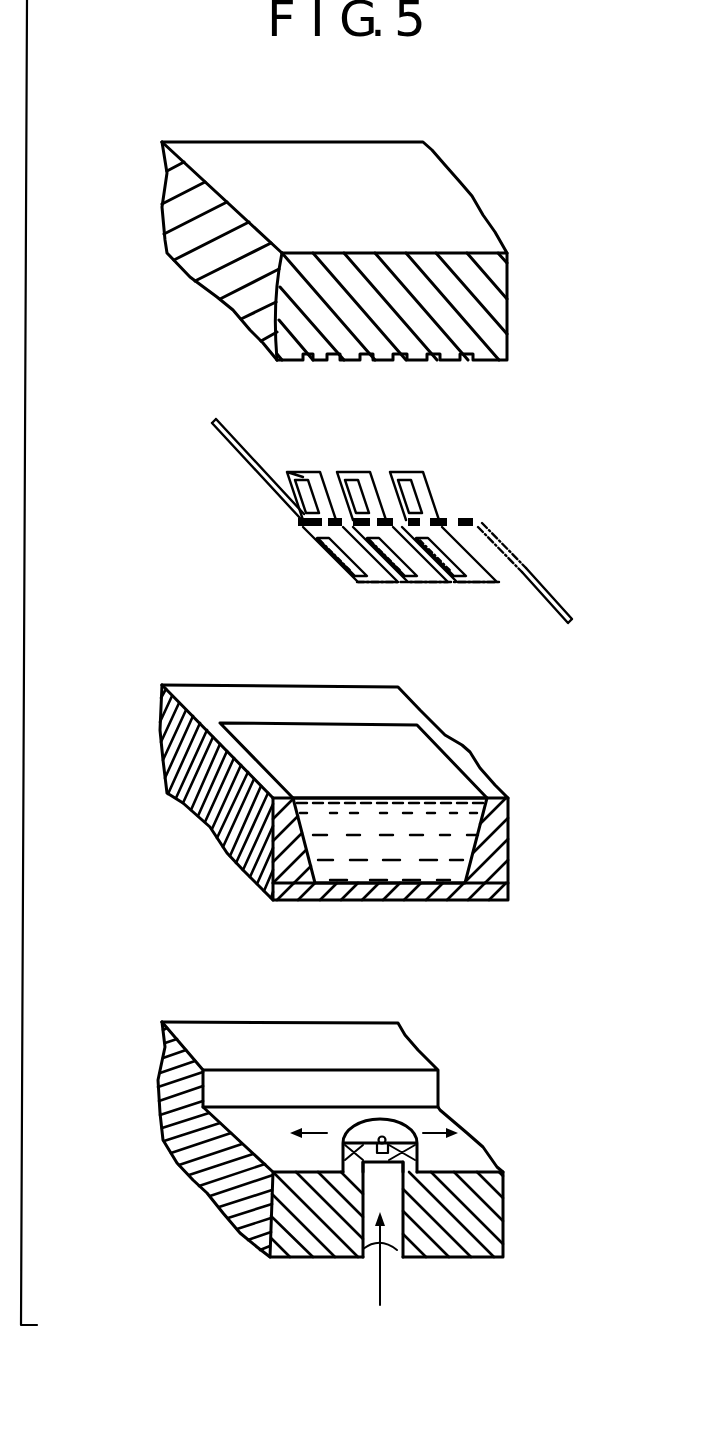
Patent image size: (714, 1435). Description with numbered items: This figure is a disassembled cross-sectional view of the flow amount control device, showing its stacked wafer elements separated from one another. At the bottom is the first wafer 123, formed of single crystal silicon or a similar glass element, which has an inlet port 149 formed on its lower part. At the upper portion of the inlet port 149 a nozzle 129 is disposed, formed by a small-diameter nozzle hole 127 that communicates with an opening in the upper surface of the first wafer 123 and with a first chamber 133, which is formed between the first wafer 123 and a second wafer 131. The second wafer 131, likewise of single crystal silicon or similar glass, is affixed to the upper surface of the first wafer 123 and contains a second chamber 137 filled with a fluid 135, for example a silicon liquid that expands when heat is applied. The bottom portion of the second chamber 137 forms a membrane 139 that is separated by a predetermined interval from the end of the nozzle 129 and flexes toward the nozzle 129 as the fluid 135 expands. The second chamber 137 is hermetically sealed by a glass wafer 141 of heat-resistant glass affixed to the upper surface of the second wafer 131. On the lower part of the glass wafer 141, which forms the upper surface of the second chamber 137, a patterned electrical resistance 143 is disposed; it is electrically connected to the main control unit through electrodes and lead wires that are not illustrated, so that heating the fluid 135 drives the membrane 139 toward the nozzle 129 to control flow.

The first wafer 123 is at (380, 1144).
The nozzle hole 127 is at (358, 1156).
The nozzle 129 is at (367, 1127).
The second wafer 131 is at (381, 817).
The first chamber 133 is at (430, 1118).
The fluid 135 is at (428, 870).
The second chamber 137 is at (476, 825).
The membrane 139 is at (380, 890).
The glass wafer 141 is at (498, 305).
The patterned electrical resistance 143 is at (523, 455).
The inlet port 149 is at (393, 1237).